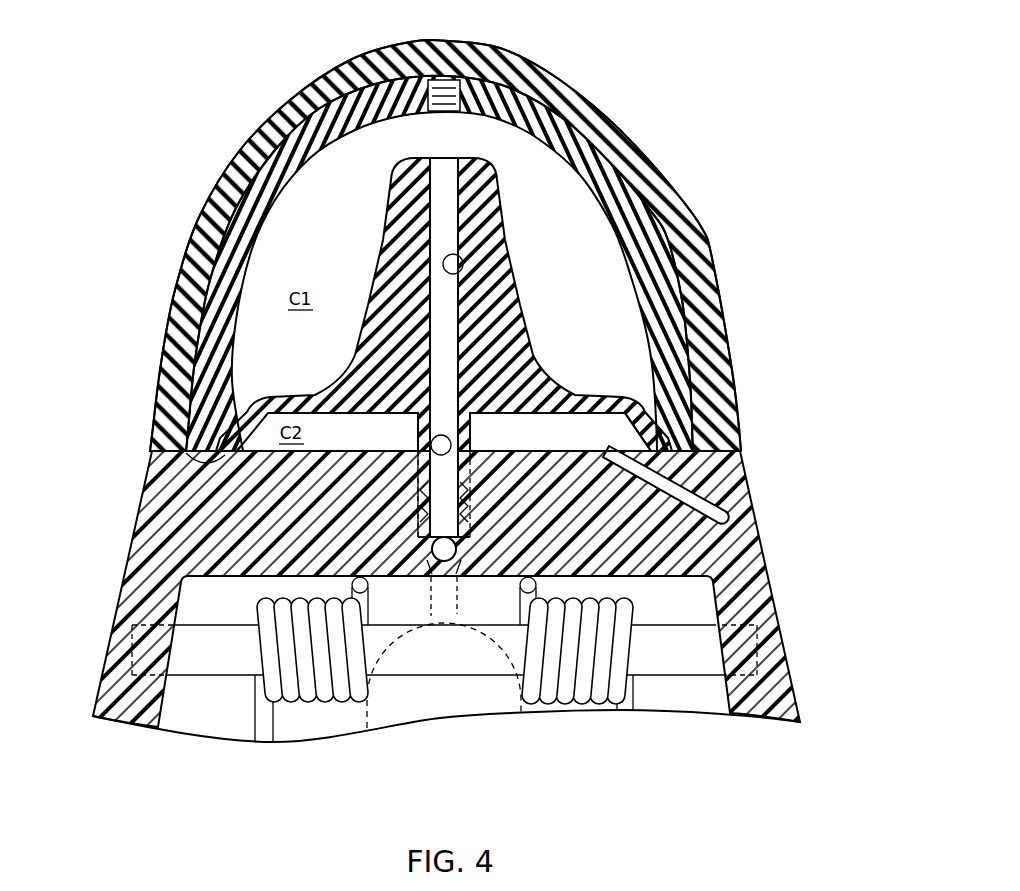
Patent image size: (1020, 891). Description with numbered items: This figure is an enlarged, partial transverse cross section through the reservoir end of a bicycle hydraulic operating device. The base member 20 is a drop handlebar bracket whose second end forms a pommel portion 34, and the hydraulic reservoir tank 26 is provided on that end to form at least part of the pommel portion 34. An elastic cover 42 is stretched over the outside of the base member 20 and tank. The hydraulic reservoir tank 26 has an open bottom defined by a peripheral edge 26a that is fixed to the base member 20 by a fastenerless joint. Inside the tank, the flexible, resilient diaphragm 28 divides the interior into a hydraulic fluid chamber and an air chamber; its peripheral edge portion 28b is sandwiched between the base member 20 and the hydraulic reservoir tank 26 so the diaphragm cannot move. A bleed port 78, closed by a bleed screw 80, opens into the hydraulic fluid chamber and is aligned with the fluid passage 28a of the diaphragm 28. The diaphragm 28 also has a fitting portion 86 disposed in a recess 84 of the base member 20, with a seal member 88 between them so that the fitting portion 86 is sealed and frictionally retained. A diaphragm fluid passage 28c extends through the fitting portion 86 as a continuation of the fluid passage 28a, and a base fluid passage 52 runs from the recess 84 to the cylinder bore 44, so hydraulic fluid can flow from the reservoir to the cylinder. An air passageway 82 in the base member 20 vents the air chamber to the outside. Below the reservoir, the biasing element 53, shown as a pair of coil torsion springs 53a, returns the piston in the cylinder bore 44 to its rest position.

The base member 20 is at (118, 584).
The hydraulic reservoir tank 26 is at (571, 128).
The peripheral edge 26a is at (222, 455).
The diaphragm 28 is at (516, 243).
The fluid passage 28a is at (462, 270).
The peripheral edge portion 28b is at (657, 418).
The diaphragm fluid passage 28c is at (431, 437).
The pommel portion 34 is at (135, 530).
The cover 42 is at (638, 166).
The cylinder bore 44 is at (489, 628).
The base fluid passage 52 is at (430, 594).
The biasing element 53 is at (445, 707).
The coil torsion springs 53a is at (587, 781).
The bleed port 78 is at (457, 100).
The bleed screw 80 is at (449, 90).
The air passageway 82 is at (734, 520).
The recess 84 is at (463, 500).
The fitting portion 86 is at (473, 433).
The seal member 88 is at (414, 497).